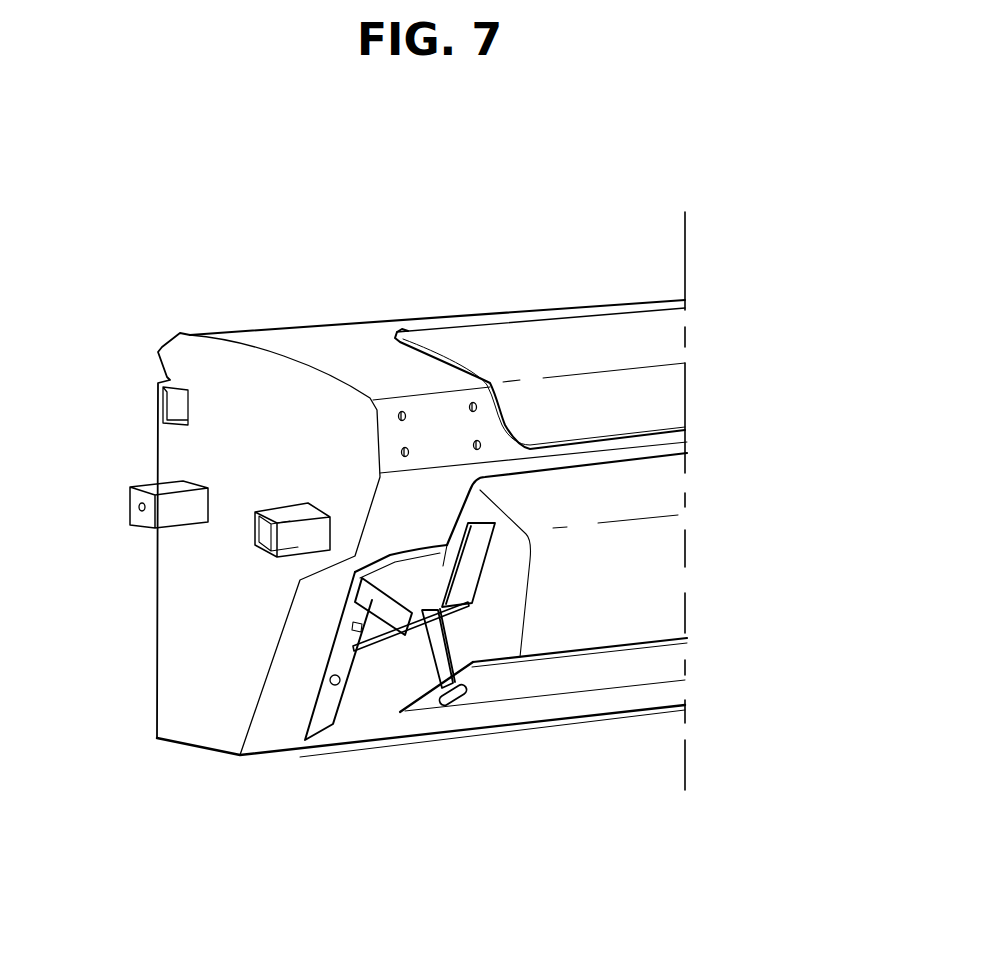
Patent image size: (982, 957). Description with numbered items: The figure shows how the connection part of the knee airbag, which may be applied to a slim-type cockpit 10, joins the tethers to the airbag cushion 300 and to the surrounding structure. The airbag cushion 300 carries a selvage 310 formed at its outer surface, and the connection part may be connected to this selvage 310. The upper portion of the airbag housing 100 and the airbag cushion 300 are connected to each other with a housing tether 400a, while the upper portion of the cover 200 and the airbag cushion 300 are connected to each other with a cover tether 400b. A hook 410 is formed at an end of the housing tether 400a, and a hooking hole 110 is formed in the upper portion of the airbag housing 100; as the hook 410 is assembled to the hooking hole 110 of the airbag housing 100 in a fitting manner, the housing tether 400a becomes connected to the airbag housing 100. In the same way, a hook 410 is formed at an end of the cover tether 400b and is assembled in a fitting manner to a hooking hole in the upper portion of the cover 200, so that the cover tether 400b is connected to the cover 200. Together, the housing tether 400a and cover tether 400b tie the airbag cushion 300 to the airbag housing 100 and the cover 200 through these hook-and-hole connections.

The slim-type cockpit 10 is at (297, 316).
The airbag housing 100 is at (340, 658).
The hooking hole 110 is at (360, 586).
The cover 200 is at (587, 690).
The airbag cushion 300 is at (647, 577).
The selvage 310 is at (473, 558).
The housing tether 400a is at (387, 615).
The cover tether 400b is at (437, 647).
The hook 410 is at (455, 700).